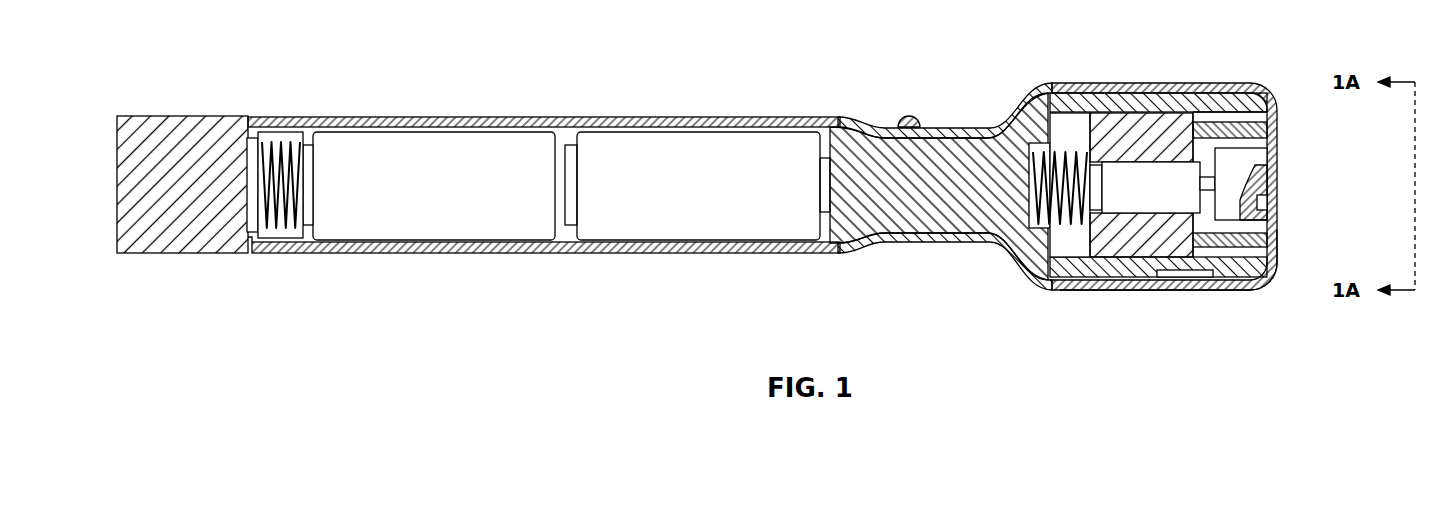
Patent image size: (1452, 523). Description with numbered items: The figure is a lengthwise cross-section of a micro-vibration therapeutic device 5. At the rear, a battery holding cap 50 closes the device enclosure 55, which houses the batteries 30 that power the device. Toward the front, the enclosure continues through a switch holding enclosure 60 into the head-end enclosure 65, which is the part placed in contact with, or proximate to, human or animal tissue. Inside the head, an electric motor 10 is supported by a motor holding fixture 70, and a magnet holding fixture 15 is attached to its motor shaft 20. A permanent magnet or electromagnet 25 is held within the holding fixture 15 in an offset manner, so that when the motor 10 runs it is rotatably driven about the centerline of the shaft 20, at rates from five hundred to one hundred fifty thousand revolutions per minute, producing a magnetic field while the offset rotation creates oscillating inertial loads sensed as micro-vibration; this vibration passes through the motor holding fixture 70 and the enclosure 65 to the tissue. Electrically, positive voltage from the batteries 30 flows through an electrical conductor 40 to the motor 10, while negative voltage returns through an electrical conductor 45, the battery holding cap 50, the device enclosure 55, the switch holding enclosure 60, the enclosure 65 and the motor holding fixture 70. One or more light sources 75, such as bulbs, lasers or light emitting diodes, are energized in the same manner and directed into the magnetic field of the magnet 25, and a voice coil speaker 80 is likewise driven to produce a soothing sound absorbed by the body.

The therapeutic device 5 is at (113, 80).
The electric motor 10 is at (1092, 260).
The magnet holding fixture 15 is at (1220, 276).
The motor shaft 20 is at (1210, 175).
The permanent magnet or electromagnet 25 is at (1268, 205).
The batteries 30 is at (348, 241).
The electrical conductor 40 is at (1045, 227).
The electrical conductor 45 is at (267, 137).
The battery holding cap 50 is at (205, 116).
The device enclosure 55 is at (362, 117).
The switch holding enclosure 60 is at (835, 118).
The enclosure 65 is at (1262, 272).
The motor holding fixture 70 is at (1197, 83).
The light source 75 is at (1237, 113).
The voice coil speaker 80 is at (1177, 276).